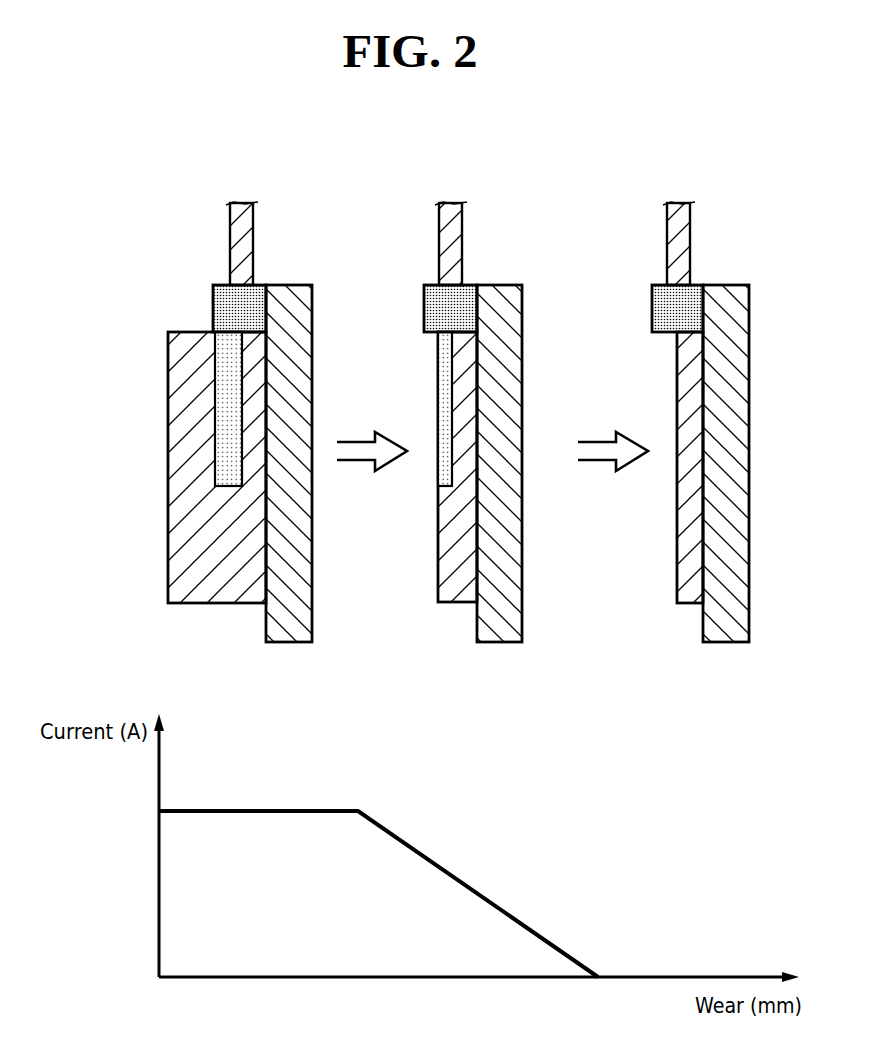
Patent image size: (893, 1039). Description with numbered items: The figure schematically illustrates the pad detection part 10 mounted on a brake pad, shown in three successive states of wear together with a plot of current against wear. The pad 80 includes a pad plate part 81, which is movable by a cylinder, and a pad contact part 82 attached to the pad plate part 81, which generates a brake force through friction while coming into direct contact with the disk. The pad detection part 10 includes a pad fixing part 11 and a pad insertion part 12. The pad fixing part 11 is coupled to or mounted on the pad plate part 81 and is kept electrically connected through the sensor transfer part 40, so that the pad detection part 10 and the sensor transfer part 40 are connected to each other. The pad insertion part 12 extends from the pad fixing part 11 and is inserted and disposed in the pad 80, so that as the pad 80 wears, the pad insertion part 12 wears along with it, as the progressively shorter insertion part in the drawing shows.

The pad detection part 10 is at (141, 385).
The pad fixing part 11 is at (230, 297).
The pad insertion part 12 is at (227, 368).
The sensor transfer part 40 is at (240, 223).
The pad 80 is at (242, 529).
The pad plate part 81 is at (291, 498).
The pad contact part 82 is at (223, 588).